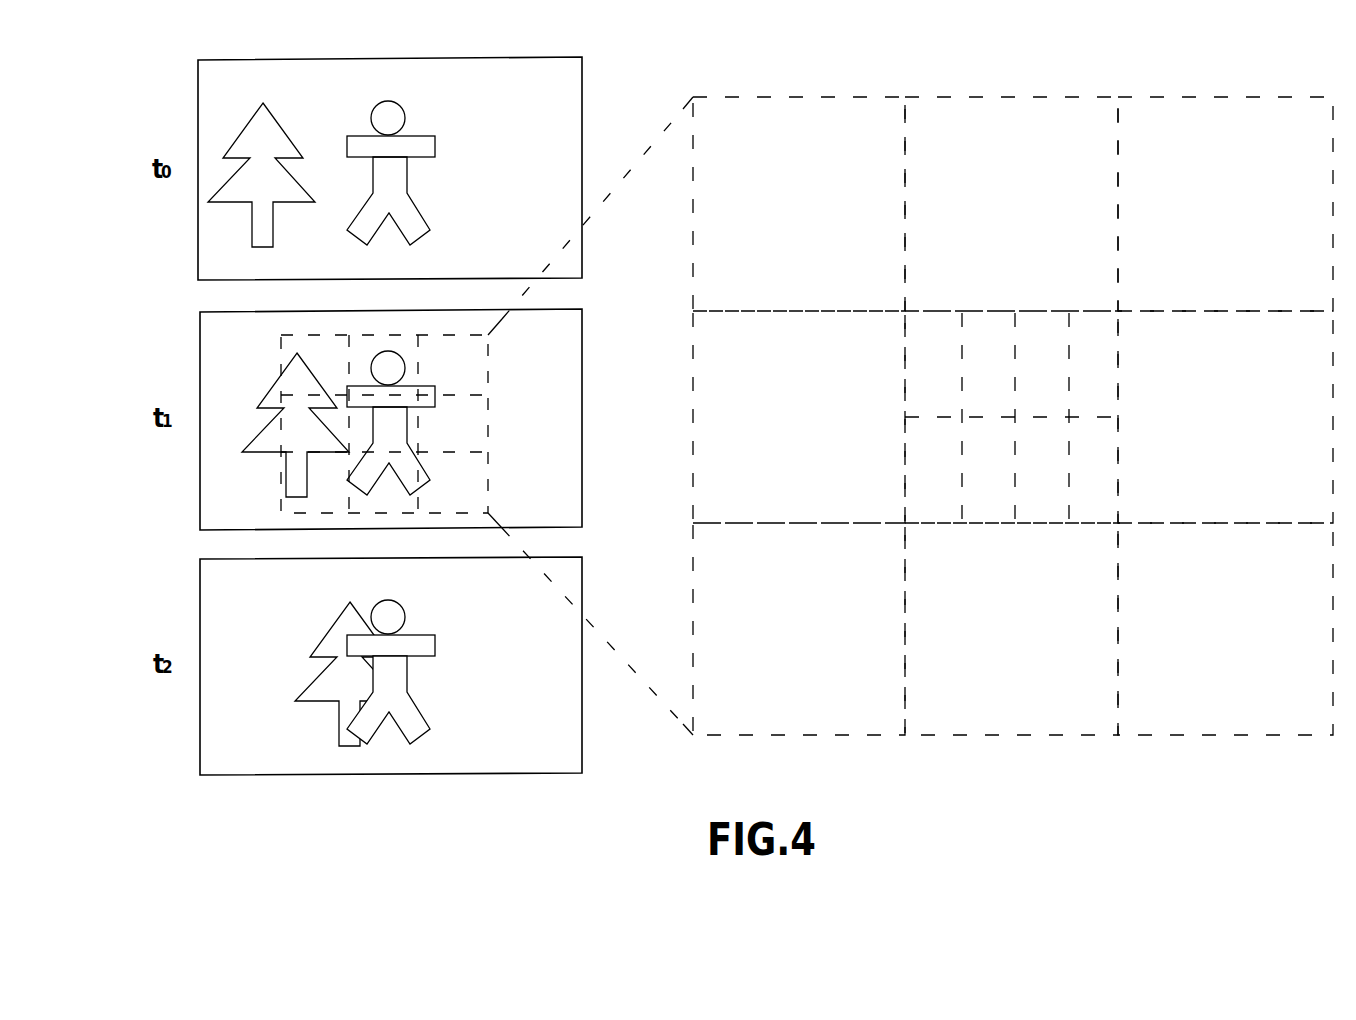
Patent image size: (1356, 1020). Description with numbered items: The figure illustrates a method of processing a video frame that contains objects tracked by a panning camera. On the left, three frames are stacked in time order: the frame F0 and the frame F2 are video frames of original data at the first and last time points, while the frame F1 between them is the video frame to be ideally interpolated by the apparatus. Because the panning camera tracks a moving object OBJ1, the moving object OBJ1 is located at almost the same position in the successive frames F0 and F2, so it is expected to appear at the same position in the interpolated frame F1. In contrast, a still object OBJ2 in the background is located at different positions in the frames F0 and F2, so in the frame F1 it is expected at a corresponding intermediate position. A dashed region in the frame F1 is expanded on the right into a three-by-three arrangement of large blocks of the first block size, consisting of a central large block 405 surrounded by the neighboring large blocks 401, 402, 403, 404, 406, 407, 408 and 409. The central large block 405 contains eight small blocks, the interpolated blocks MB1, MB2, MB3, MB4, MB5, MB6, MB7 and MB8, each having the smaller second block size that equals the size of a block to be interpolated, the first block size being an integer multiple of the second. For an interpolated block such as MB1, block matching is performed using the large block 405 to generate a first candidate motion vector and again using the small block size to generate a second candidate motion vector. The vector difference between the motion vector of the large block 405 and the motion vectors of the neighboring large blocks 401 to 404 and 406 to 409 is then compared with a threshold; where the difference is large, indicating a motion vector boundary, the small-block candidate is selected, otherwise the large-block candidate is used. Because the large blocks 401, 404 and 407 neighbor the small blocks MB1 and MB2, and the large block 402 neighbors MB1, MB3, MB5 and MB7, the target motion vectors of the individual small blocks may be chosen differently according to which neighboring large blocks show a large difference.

The neighboring large block 401 is at (799, 204).
The neighboring large block 402 is at (1011, 204).
The neighboring large block 403 is at (1225, 204).
The neighboring large block 404 is at (799, 417).
The large block 405 is at (1011, 272).
The neighboring large block 406 is at (1225, 417).
The neighboring large block 407 is at (799, 629).
The neighboring large block 408 is at (1011, 629).
The neighboring large block 409 is at (1225, 629).
The moving object OBJ1 is at (459, 405).
The still object OBJ2 is at (303, 412).
The frame F0 is at (411, 168).
The interpolated frame F1 is at (414, 419).
The frame F2 is at (414, 666).
The interpolated block MB1 is at (933, 364).
The interpolated block MB2 is at (933, 470).
The interpolated block MB3 is at (988, 364).
The interpolated block MB4 is at (988, 470).
The interpolated block MB5 is at (1042, 364).
The interpolated block MB6 is at (1042, 470).
The interpolated block MB7 is at (1093, 364).
The interpolated block MB8 is at (1093, 470).